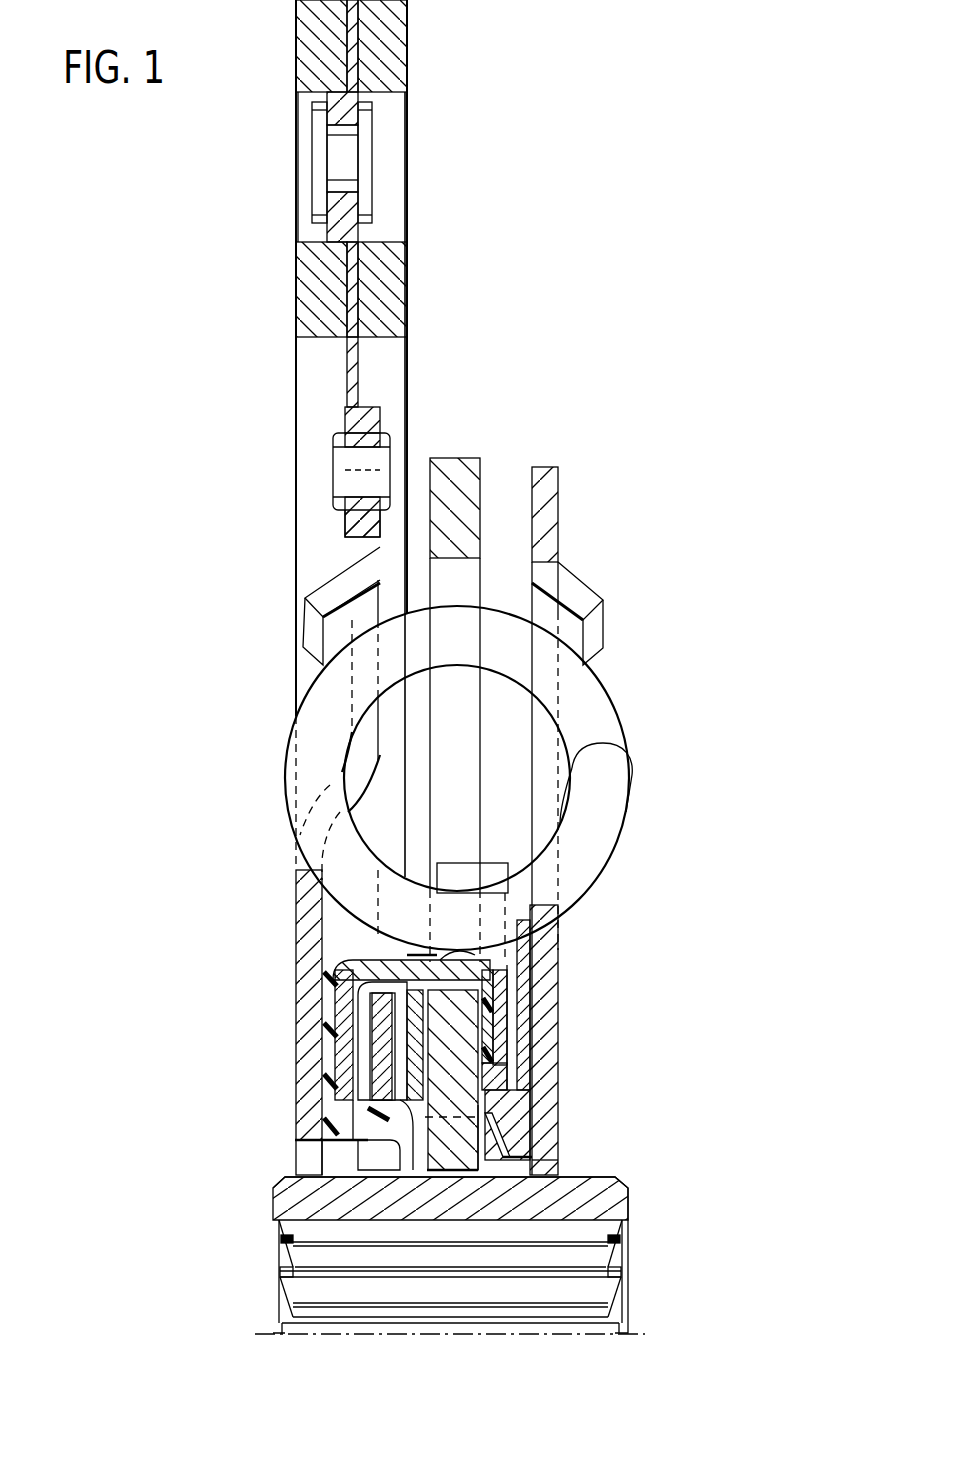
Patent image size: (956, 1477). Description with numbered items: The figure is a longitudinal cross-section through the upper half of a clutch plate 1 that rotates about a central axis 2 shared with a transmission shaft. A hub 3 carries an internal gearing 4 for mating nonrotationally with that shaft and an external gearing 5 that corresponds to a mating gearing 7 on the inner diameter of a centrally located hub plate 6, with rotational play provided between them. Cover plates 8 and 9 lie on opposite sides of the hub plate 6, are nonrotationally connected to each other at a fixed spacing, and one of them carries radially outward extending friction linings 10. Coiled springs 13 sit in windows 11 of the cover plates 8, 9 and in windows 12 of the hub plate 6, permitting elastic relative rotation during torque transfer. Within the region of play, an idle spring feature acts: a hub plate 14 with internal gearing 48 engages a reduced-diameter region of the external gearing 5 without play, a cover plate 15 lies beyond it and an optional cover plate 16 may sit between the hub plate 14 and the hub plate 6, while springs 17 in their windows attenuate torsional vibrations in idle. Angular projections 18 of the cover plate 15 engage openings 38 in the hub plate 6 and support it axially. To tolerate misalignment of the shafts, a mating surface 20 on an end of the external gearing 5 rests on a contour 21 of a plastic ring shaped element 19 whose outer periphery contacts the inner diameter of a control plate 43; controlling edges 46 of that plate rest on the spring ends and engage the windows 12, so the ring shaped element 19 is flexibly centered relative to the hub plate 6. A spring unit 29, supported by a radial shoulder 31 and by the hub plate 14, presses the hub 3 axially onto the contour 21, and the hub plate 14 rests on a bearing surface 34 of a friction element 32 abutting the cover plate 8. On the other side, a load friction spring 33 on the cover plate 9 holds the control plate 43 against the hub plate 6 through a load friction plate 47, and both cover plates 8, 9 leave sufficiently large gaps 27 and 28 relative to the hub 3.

The clutch plate 1 is at (618, 140).
The central axis 2 is at (645, 1336).
The hub 3 is at (625, 1195).
The internal gearing 4 is at (605, 1235).
The external gearing 5 is at (600, 1270).
The hub plate 6 is at (457, 470).
The mating gearing 7 is at (300, 1290).
The cover plate 8 is at (365, 543).
The cover plate 9 is at (545, 537).
The friction linings 10 is at (370, 290).
The windows 11 is at (362, 738).
The windows 12 is at (470, 578).
The coiled springs 13 is at (608, 835).
The hub plate 14 is at (383, 1000).
The cover plate 15 is at (340, 978).
The cover plate 16 is at (493, 1078).
The springs 17 is at (330, 1068).
The angular projections 18 is at (318, 920).
The ring shaped element 19 is at (515, 1125).
The mating surface 20 is at (485, 1105).
The contour 21 is at (512, 1138).
The gap 27 is at (546, 1167).
The gap 28 is at (300, 1152).
The spring unit 29 is at (455, 990).
The radial shoulder 31 is at (450, 1040).
The friction element 32 is at (325, 1030).
The load friction spring 33 is at (522, 1040).
The bearing surface 34 is at (350, 1122).
The openings 38 is at (400, 1070).
The control plate 43 is at (500, 975).
The controlling edges 46 is at (466, 958).
The load friction plate 47 is at (495, 1030).
The internal gearing 48 is at (282, 1240).